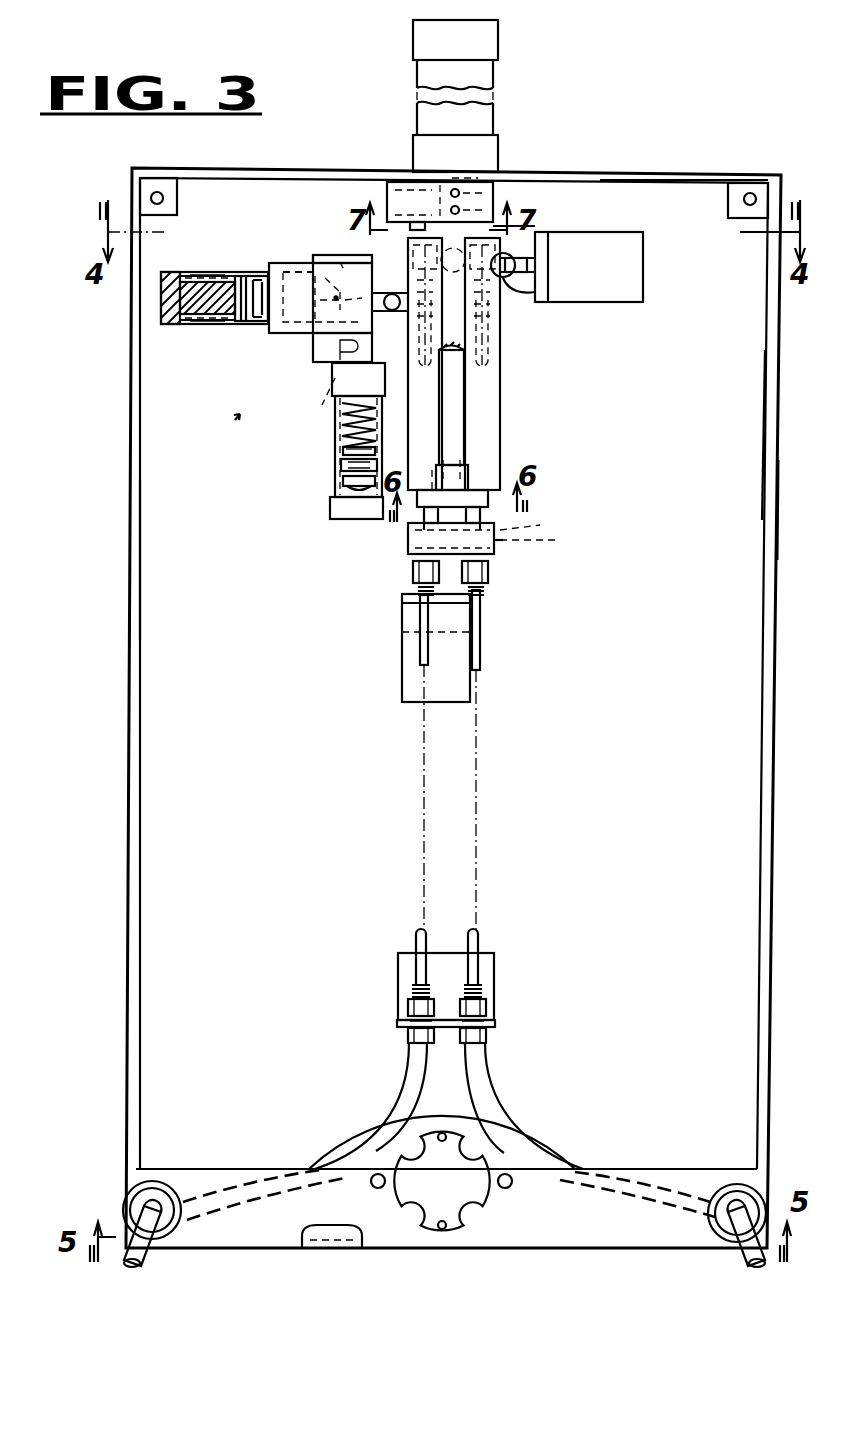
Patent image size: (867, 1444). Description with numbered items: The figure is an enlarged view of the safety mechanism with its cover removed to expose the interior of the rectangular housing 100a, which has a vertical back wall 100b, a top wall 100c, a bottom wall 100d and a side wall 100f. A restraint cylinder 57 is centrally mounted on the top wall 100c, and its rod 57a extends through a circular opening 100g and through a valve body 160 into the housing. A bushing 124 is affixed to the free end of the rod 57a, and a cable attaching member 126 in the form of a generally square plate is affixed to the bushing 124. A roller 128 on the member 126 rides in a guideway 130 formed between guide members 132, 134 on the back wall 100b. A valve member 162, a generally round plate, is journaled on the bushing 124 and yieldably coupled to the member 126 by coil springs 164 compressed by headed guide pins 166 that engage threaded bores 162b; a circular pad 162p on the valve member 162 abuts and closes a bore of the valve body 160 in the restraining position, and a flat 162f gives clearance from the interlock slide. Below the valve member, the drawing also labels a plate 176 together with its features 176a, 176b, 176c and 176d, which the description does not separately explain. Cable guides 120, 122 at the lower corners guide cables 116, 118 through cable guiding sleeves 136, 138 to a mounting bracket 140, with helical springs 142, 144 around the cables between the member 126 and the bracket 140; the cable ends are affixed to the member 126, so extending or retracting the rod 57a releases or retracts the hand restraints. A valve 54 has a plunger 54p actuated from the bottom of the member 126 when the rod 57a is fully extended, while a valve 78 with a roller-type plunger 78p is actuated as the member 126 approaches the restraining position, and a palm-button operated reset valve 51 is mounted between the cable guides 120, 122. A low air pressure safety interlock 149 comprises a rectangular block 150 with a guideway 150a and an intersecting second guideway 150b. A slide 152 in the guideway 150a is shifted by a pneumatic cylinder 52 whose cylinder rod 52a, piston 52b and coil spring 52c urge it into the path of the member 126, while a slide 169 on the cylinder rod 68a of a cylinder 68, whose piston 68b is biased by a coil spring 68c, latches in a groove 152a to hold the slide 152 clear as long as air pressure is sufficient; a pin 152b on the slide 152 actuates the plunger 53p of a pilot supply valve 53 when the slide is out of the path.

The palm-button operated reset valve 51 is at (410, 1186).
The pneumatic cylinder 52 is at (220, 325).
The cylinder rod 52a is at (305, 266).
The piston 52b is at (252, 325).
The coil spring 52c is at (245, 272).
The pilot supply valve 53 is at (292, 335).
The plunger 53p is at (343, 288).
The valve 54 is at (455, 625).
The plunger 54p is at (452, 604).
The restraint cylinder 57 is at (497, 112).
The rod 57a is at (462, 385).
The cylinder 68 is at (335, 506).
The cylinder rod 68a is at (345, 464).
The piston 68b is at (345, 484).
The coil spring 68c is at (345, 434).
The valve 78 is at (623, 232).
The roller-type plunger 78p is at (540, 300).
The rectangular housing 100a is at (740, 175).
The back wall 100b is at (765, 432).
The top wall 100c is at (650, 175).
The bottom wall 100d is at (327, 1241).
The side wall 100f is at (778, 522).
The circular opening 100g is at (465, 178).
The cable 116 is at (745, 1252).
The cable 118 is at (135, 1242).
The cable guide 120 is at (735, 1196).
The cable guide 122 is at (165, 1196).
The bushing 124 is at (470, 462).
The cable attaching member 126 is at (515, 290).
The roller 128 is at (445, 578).
The guideway 130 is at (482, 322).
The guide member 132 is at (500, 360).
The guide member 134 is at (448, 412).
The cable guiding sleeve 136 is at (487, 1090).
The cable guiding sleeve 138 is at (405, 1092).
The mounting bracket 140 is at (497, 1020).
The helical spring 142 is at (490, 995).
The helical spring 144 is at (405, 996).
The low air pressure safety interlock 149 is at (238, 416).
The rectangular block 150 is at (330, 355).
The guideway 150a is at (358, 379).
The second guideway 150b is at (335, 380).
The slide 152 is at (388, 282).
The groove 152a is at (345, 264).
The pin 152b is at (383, 348).
The valve body 160 is at (490, 196).
The valve member 162 is at (490, 492).
The threaded bore 162b is at (432, 490).
The flat 162f is at (426, 500).
The circular pad 162p is at (458, 488).
The coil spring 164 is at (420, 522).
The headed guide pin 166 is at (388, 563).
The slide 169 is at (345, 410).
The lower plate 176 is at (497, 550).
The lower plate edge 176a is at (500, 546).
The lower plate slot 176b is at (535, 525).
The lower plate hole 176c is at (560, 540).
The lower plate nut 176d is at (470, 586).